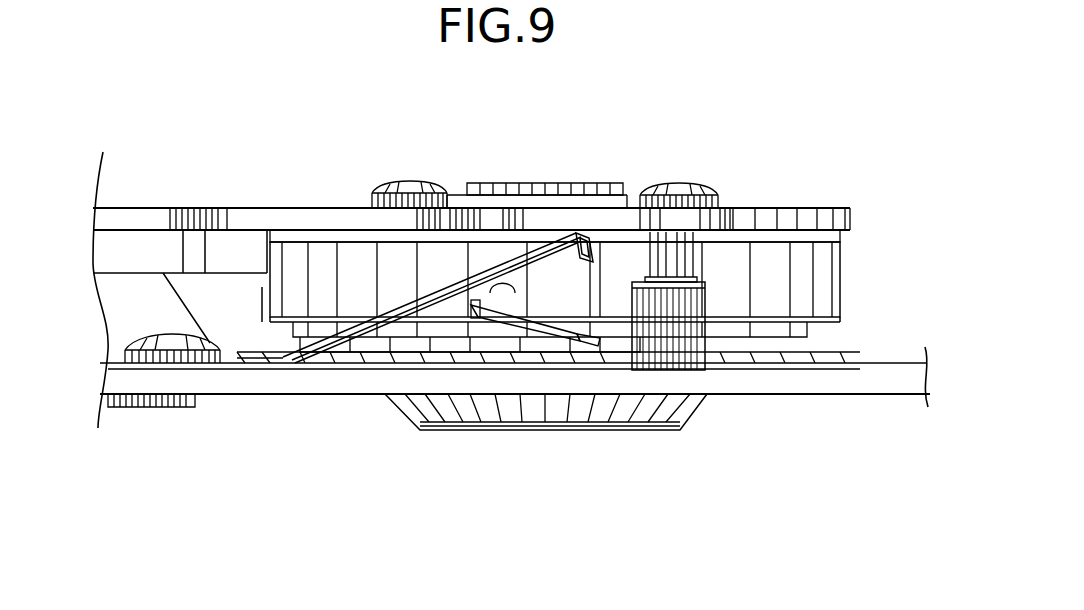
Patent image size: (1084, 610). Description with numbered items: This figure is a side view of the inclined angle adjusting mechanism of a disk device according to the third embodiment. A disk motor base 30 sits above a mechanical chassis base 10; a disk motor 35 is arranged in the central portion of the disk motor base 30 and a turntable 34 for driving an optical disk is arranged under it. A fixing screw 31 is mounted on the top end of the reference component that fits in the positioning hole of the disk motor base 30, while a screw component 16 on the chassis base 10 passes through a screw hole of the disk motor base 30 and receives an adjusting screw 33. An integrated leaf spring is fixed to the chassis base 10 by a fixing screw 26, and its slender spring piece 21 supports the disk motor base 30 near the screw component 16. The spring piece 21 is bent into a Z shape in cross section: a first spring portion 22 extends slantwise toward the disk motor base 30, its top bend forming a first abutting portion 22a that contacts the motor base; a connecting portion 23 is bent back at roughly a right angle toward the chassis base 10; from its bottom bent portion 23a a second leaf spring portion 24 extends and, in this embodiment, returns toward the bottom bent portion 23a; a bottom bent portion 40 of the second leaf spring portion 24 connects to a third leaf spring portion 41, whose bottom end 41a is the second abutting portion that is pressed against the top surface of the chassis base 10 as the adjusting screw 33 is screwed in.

The mechanical chassis base 10 is at (240, 385).
The screw component 16 is at (680, 337).
The spring piece 21 is at (487, 248).
The first spring portion 22 is at (285, 365).
The first abutting portion 22a is at (578, 215).
The connecting portion 23 is at (600, 252).
The bottom bent portion 23a is at (596, 262).
The second leaf spring portion 24 is at (500, 338).
The fixing screw 26 is at (172, 362).
The disk motor base 30 is at (815, 222).
The fixing screw 31 is at (413, 210).
The adjusting screw 33 is at (674, 182).
The turntable 34 is at (648, 405).
The disk motor 35 is at (826, 289).
The bottom bent portion 40 is at (468, 308).
The third leaf spring portion 41 is at (476, 320).
The bottom end of the third leaf spring portion 41a is at (582, 344).